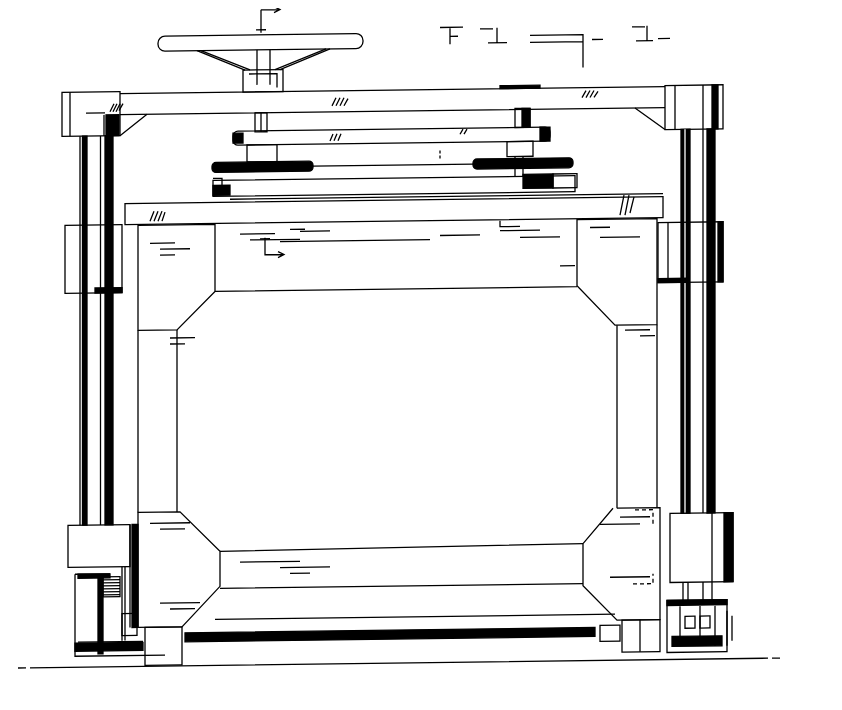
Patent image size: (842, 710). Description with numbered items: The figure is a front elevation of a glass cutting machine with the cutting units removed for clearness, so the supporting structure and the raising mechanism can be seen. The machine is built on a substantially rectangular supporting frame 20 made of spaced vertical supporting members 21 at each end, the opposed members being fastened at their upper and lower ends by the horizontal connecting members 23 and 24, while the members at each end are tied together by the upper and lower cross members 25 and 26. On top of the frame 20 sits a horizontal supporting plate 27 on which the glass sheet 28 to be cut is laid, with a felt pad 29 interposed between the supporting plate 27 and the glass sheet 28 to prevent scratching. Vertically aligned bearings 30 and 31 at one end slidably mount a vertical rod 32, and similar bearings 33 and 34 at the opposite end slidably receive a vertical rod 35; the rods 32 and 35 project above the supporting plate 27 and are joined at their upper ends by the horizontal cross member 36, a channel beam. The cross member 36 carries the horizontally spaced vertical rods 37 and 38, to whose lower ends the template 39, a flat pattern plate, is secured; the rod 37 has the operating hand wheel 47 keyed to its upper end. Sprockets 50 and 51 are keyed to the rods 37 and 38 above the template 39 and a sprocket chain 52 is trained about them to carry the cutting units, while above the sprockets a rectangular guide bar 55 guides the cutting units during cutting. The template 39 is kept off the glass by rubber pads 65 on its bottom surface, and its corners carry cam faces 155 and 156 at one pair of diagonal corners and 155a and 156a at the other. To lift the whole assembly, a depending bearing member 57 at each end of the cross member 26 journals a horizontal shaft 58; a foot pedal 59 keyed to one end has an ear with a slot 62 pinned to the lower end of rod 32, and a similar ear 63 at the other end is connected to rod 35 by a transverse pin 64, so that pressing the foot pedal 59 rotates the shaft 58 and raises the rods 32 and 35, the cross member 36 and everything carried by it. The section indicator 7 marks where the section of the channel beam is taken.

The section line 7- 7 is at (265, 136).
The supporting frame 20 is at (527, 543).
The vertical supporting member 21 is at (162, 367).
The horizontal connecting member 23 is at (374, 273).
The horizontal connecting member 24 is at (380, 523).
The cross member 25 is at (138, 260).
The cross member 26 is at (145, 547).
The horizontal supporting plate 27 is at (466, 214).
The glass sheet 28 is at (213, 186).
The pad 29 is at (650, 186).
The bearing 30 is at (72, 258).
The bearing 31 is at (78, 545).
The vertical rod 32 is at (92, 349).
The bearing 33 is at (708, 254).
The bearing 34 is at (705, 541).
The vertical rod 35 is at (703, 394).
The horizontal cross member 36 is at (430, 90).
The vertical rod 37 is at (273, 121).
The vertical rod 38 is at (532, 122).
The template 39 is at (361, 156).
The operating hand wheel 47 is at (222, 32).
The sprocket 50 is at (232, 158).
The sprocket 51 is at (549, 161).
The sprocket chain 52 is at (440, 151).
The guide bar 55 is at (462, 124).
The depending bearing member 57 is at (133, 653).
The horizontal shaft 58 is at (330, 629).
The foot pedal 59 is at (92, 592).
The slot 62 is at (656, 646).
The ear 63 is at (682, 655).
The transverse pin 64 is at (702, 655).
The rubber pad 65 is at (293, 206).
The cam face 155 is at (232, 181).
The cam face 155a is at (556, 183).
The cam face 156 is at (212, 173).
The cam face 156a is at (542, 180).